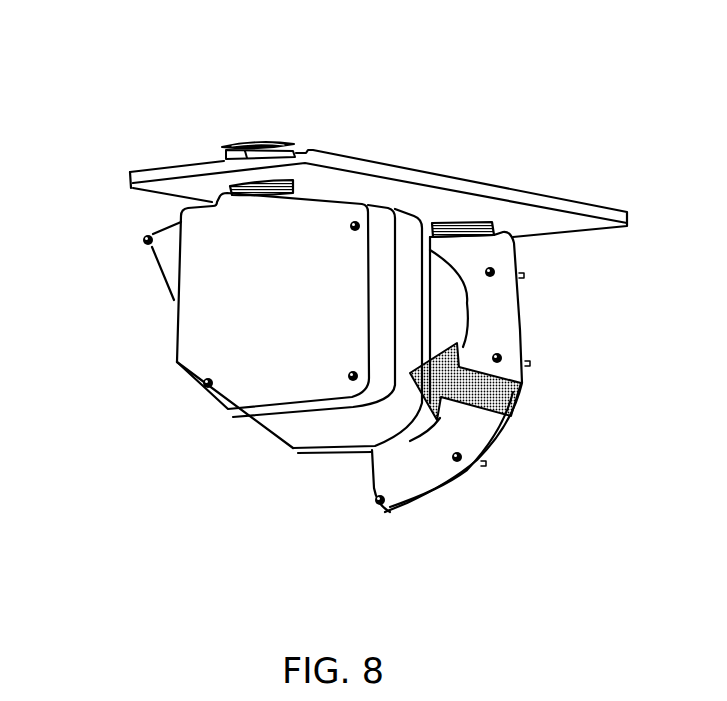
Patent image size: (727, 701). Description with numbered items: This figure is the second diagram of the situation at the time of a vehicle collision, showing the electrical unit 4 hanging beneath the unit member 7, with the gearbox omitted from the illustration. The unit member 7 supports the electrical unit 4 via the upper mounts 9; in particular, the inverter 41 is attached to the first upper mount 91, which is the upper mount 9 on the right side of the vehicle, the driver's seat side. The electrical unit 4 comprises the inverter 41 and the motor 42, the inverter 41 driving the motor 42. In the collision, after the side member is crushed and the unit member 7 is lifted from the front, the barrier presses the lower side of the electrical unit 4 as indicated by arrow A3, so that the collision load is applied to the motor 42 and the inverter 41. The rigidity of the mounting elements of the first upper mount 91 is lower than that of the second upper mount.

The electrical unit 4 is at (280, 410).
The unit member 7 is at (417, 170).
The upper mount 9 is at (256, 96).
The first upper mount 91 is at (256, 138).
The inverter 41 is at (308, 424).
The motor 42 is at (415, 472).
The arrow A3 is at (467, 473).